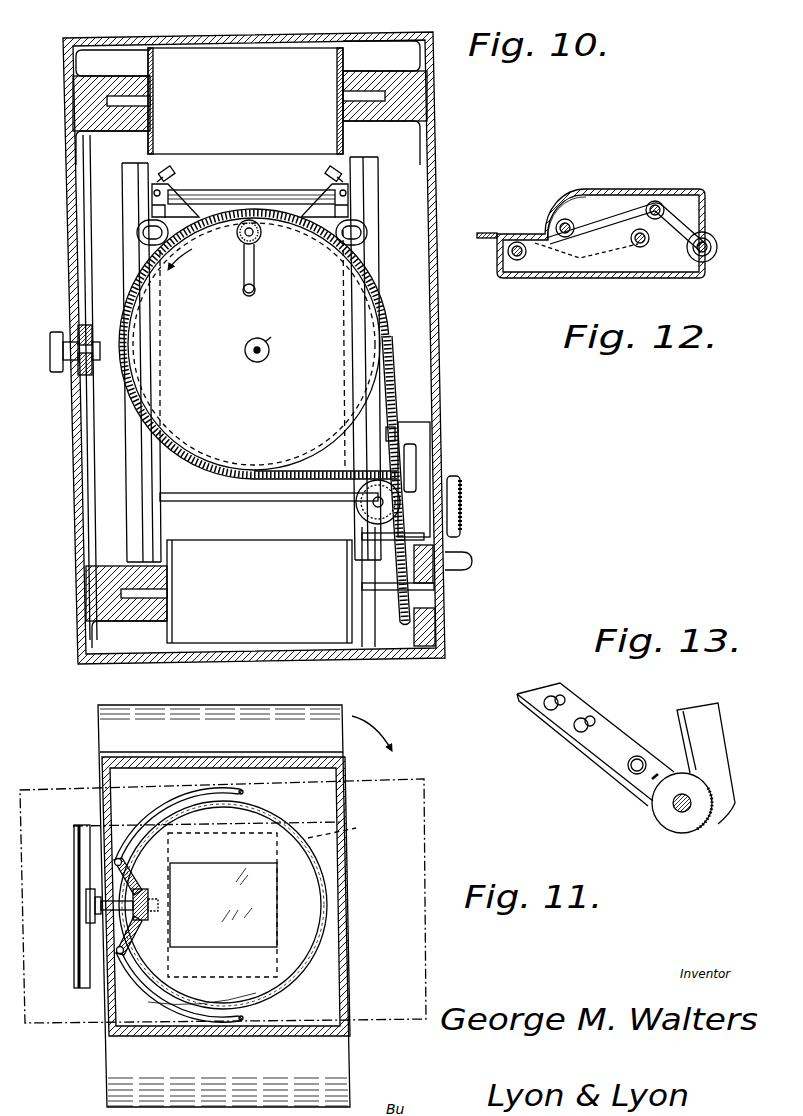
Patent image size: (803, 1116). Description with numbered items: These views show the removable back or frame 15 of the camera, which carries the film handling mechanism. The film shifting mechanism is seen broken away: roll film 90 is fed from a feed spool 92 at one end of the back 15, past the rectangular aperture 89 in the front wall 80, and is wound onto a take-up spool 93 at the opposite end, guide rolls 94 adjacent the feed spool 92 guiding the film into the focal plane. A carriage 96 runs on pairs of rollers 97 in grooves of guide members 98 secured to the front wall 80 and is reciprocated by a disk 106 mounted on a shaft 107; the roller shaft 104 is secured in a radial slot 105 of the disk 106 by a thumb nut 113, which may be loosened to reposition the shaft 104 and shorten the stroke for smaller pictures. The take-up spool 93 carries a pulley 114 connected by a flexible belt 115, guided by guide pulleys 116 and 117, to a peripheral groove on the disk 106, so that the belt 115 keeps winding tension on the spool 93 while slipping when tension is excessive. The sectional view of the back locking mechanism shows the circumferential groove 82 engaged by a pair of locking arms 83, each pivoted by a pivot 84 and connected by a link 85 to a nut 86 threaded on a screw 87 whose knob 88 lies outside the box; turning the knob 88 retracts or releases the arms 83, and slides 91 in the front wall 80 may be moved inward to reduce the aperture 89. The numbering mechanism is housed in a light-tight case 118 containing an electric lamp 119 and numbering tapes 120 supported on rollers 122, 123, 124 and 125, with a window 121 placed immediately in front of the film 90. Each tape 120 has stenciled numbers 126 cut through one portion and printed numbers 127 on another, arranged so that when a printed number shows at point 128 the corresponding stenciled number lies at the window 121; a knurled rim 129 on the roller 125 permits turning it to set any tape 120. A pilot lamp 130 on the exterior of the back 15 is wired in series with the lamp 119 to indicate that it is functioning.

In FIG. 10, the frame 15 is at (438, 146).
In FIG. 11, the frame 15 is at (96, 722).
In FIG. 11, the front wall 80 is at (256, 993).
In FIG. 11, the circumferential groove 82 is at (290, 823).
In FIG. 11, the locking arms 83 is at (162, 813).
In FIG. 11, the pivot 84 is at (243, 797).
In FIG. 11, the link 85 is at (130, 882).
In FIG. 11, the nut 86 is at (150, 896).
In FIG. 11, the screw 87 is at (159, 907).
In FIG. 11, the knob 88 is at (85, 900).
In FIG. 11, the aperture 89 is at (223, 901).
In FIG. 12, the sensitive film 90 is at (482, 232).
In FIG. 11, the sensitive film 90 is at (268, 892).
In FIG. 11, the slides 91 is at (85, 846).
In FIG. 10, the feed spool 92 is at (345, 60).
In FIG. 10, the take-up spool 93 is at (172, 621).
In FIG. 10, the guide rolls 94 is at (173, 178).
In FIG. 10, the carriage 96 is at (370, 222).
In FIG. 10, the rollers 97 is at (150, 189).
In FIG. 10, the guide members 98 is at (127, 255).
In FIG. 10, the shaft 104 is at (243, 238).
In FIG. 10, the radial slot 105 is at (244, 264).
In FIG. 10, the disk 106 is at (358, 308).
In FIG. 10, the shaft 107 is at (260, 352).
In FIG. 10, the thumb nut 113 is at (256, 236).
In FIG. 10, the pulley 114 is at (396, 622).
In FIG. 10, the flexible belt 115 is at (393, 388).
In FIG. 10, the guide pulley 116 is at (358, 506).
In FIG. 10, the guide pulley 117 is at (415, 423).
In FIG. 10, the case 118 is at (452, 520).
In FIG. 12, the case 118 is at (641, 187).
In FIG. 12, the electric lamp 119 is at (649, 235).
In FIG. 12, the numbering tapes 120 is at (617, 216).
In FIG. 13, the numbering tapes 120 is at (554, 721).
In FIG. 12, the window 121 is at (538, 232).
In FIG. 12, the roller 122 is at (527, 262).
In FIG. 12, the roller 123 is at (570, 221).
In FIG. 12, the roller 124 is at (586, 243).
In FIG. 12, the roller 125 is at (712, 242).
In FIG. 13, the numbers cut through 126 is at (589, 718).
In FIG. 13, the printed numbers 127 is at (712, 749).
In FIG. 12, the point 128 is at (715, 250).
In FIG. 10, the knurled rim 129 is at (461, 490).
In FIG. 12, the knurled rim 129 is at (708, 262).
In FIG. 13, the knurled rim 129 is at (700, 831).
In FIG. 10, the pilot lamp 130 is at (470, 566).